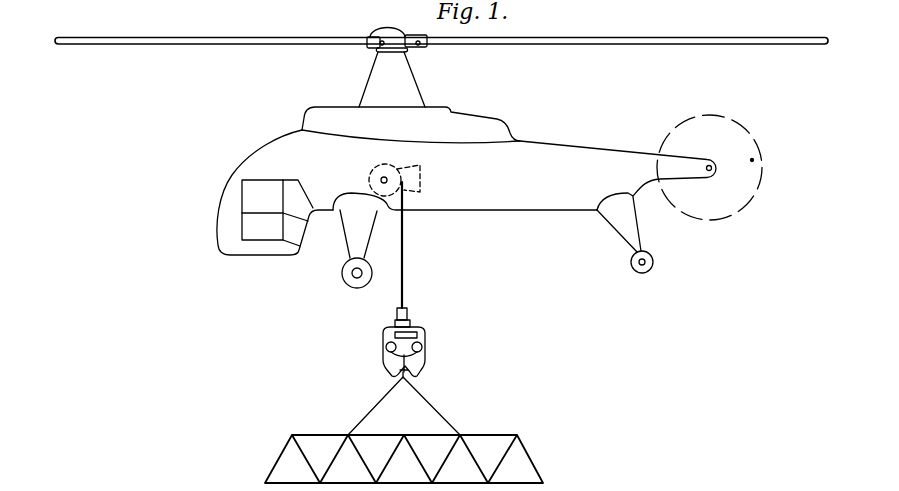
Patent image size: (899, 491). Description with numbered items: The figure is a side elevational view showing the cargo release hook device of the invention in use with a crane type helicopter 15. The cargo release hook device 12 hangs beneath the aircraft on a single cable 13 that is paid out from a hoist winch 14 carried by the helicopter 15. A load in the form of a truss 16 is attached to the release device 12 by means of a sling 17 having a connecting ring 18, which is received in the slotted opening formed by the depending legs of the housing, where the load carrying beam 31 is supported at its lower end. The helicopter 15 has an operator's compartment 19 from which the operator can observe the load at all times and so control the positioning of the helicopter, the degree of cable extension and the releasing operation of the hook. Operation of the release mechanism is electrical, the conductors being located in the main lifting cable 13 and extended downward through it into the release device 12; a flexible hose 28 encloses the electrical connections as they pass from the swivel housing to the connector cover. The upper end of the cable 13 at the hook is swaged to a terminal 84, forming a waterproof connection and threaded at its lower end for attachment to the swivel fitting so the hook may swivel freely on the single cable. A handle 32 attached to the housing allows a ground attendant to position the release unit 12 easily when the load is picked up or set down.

The cargo release hook device 12 is at (385, 343).
The cable 13 is at (403, 272).
The hoist winch 14 is at (393, 186).
The crane type helicopter 15 is at (537, 152).
The truss 16 is at (532, 461).
The sling 17 is at (441, 410).
The connecting ring 18 is at (399, 378).
The operator's compartment 19 is at (262, 235).
The flexible hose 28 is at (396, 352).
The load carrying beam 31 is at (420, 363).
The handle 32 is at (425, 348).
The terminal 84 is at (410, 309).